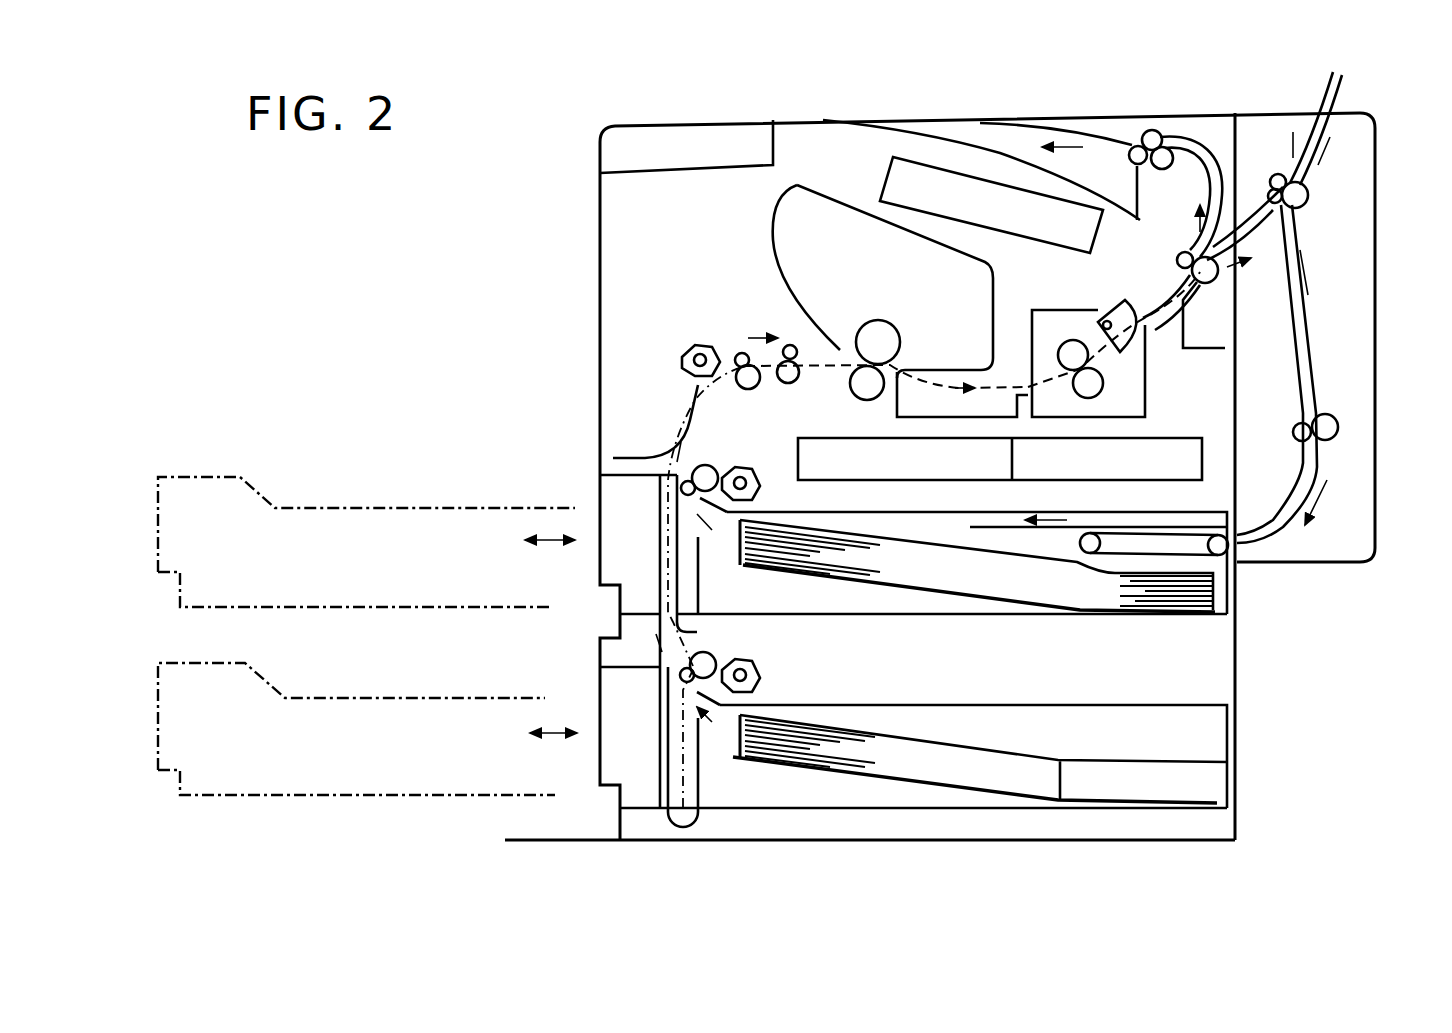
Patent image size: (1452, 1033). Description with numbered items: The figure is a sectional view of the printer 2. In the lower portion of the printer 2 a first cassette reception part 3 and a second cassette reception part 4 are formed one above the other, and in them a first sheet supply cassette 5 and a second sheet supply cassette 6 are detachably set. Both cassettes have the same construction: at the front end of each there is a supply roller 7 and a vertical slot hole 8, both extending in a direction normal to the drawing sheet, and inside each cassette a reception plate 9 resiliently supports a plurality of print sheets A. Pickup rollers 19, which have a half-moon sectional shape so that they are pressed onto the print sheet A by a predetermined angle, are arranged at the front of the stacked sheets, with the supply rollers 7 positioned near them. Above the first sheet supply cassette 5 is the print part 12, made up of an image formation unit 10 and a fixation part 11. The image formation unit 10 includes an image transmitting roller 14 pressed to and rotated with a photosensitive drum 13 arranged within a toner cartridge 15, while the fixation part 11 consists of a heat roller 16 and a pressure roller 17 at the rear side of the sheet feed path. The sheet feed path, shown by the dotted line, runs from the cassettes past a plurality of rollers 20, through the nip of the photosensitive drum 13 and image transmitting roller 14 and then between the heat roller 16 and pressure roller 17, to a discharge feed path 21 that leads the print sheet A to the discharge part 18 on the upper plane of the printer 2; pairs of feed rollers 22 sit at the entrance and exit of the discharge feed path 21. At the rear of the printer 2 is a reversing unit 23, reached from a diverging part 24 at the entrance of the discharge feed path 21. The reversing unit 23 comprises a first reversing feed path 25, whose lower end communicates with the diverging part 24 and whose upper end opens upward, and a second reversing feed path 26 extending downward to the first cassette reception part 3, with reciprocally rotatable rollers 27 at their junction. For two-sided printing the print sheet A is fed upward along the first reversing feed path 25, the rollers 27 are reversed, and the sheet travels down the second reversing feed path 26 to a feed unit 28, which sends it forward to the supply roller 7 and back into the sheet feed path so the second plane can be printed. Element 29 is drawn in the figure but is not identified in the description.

The printer 2 is at (598, 317).
The first cassette reception part 3 is at (637, 610).
The second cassette reception part 4 is at (640, 803).
The first sheet supply cassette 5 is at (373, 505).
The second sheet supply cassette 6 is at (398, 716).
The supply roller 7 is at (681, 488).
The vertical slot hole 8 is at (663, 568).
The reception plate 9 is at (923, 583).
The print sheet A is at (807, 570).
The image formation unit 10 is at (845, 315).
The fixation part 11 is at (1036, 316).
The print part 12 is at (638, 233).
The photosensitive drum 13 is at (883, 338).
The image transmitting roller 14 is at (872, 393).
The toner cartridge 15 is at (782, 222).
The heat roller 16 is at (1070, 350).
The pressure roller 17 is at (1097, 380).
The discharge part 18 is at (937, 137).
The pickup roller 19 is at (750, 467).
The rollers 20 is at (792, 387).
The discharge feed path 21 is at (1198, 168).
The feed rollers 22 is at (1148, 133).
The reversing unit 23 is at (1320, 587).
The diverging part 24 is at (1230, 220).
The first reversing feed path 25 is at (1305, 177).
The second reversing feed path 26 is at (1300, 328).
The rollers 27 is at (1305, 203).
The feed unit 28 is at (910, 530).
The conveying belt 29 is at (1170, 530).